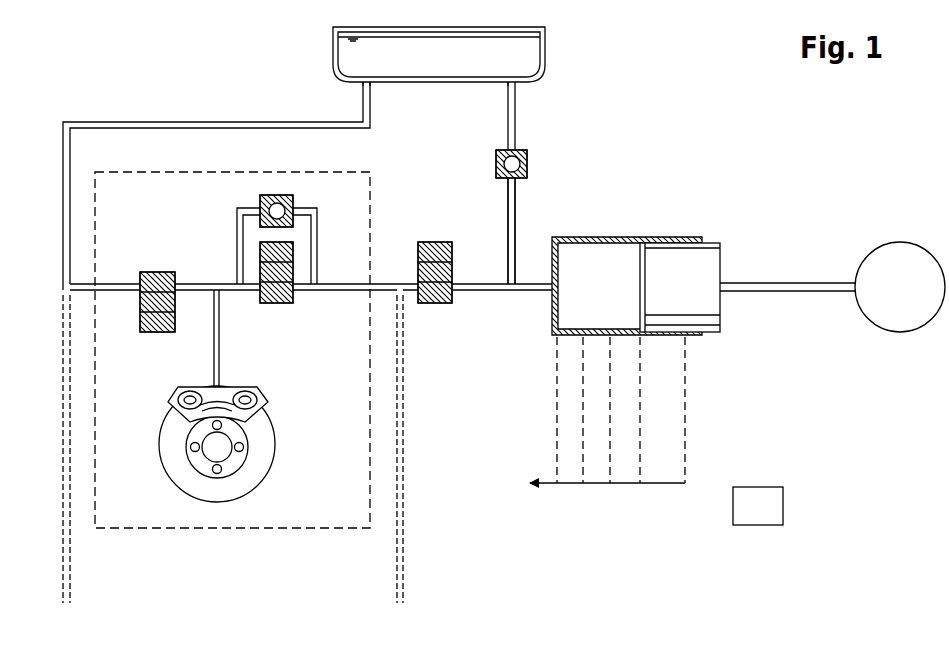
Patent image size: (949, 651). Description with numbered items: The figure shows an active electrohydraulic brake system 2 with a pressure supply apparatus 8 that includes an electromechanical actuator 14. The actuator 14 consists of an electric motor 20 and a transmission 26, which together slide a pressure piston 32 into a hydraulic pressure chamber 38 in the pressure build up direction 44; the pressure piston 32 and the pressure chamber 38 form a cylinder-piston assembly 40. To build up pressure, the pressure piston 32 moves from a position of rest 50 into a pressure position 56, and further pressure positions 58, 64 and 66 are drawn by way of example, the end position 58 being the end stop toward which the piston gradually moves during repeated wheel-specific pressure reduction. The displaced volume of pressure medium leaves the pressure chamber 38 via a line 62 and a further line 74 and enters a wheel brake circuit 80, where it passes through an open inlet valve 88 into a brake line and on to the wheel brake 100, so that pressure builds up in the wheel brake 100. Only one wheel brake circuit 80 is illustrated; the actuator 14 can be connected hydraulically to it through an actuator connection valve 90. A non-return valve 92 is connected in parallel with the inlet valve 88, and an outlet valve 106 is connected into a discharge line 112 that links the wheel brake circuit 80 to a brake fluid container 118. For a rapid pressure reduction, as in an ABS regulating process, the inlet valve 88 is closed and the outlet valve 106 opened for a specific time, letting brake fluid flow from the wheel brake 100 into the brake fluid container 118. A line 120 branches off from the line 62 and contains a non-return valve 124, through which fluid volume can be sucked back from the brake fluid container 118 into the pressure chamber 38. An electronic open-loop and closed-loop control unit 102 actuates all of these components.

The electrohydraulic brake system 2 is at (636, 90).
The pressure supply apparatus 8 is at (701, 184).
The electromechanical actuator 14 is at (839, 231).
The electric motor 20 is at (897, 331).
The transmission 26 is at (798, 292).
The pressure piston 32 is at (710, 265).
The hydraulic pressure chamber 38 is at (598, 255).
The cylinder-piston assembly 40 is at (646, 234).
The pressure build up direction 44 is at (612, 486).
The position of rest 50 is at (685, 386).
The pressure position 56 is at (640, 437).
The end position 58 is at (557, 357).
The line 62 is at (485, 283).
The pressure position 64 is at (610, 437).
The pressure position 66 is at (583, 388).
The further line 74 is at (214, 352).
The wheel brake circuit 80 is at (246, 396).
The inlet valve 88 is at (283, 305).
The actuator connection valve 90 is at (437, 305).
The non-return valve 92 is at (260, 203).
The wheel brake 100 is at (243, 393).
The electronic open-loop and closed-loop control unit 102 is at (783, 510).
The outlet valve 106 is at (158, 272).
The discharge line 112 is at (70, 157).
The brake fluid container 118 is at (333, 44).
The line 120 is at (508, 106).
The non-return valve 124 is at (496, 163).